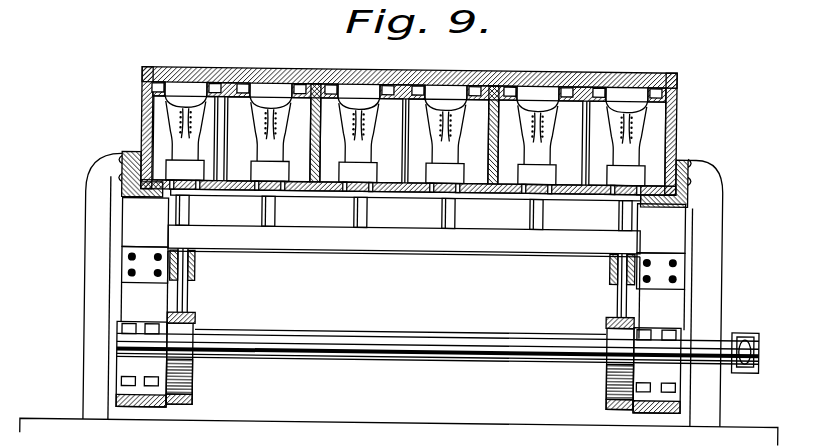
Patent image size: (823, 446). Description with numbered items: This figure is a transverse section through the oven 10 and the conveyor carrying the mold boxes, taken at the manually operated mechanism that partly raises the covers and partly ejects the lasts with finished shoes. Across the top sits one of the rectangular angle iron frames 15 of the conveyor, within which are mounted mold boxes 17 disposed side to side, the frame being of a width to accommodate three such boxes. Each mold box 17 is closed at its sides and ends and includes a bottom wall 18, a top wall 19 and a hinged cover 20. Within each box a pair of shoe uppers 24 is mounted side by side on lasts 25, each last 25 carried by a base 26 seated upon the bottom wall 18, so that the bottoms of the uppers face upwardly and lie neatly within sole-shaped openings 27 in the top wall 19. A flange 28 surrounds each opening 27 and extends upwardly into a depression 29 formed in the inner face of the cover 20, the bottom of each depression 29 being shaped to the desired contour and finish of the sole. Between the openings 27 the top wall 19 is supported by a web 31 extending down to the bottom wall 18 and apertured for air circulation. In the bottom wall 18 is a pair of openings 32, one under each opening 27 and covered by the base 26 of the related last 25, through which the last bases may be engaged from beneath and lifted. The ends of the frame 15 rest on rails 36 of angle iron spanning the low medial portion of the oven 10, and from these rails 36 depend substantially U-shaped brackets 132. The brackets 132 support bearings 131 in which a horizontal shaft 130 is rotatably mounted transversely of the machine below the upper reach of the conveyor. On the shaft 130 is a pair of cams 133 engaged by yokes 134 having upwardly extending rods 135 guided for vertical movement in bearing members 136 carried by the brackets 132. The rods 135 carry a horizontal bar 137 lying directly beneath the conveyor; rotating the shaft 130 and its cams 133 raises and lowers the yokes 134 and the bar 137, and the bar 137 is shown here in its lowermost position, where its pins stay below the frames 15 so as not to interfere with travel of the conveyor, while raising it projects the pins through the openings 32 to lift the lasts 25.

The oven 10 is at (392, 430).
The angle iron frame 15 is at (683, 154).
The mold box 17 is at (140, 110).
The bottom wall 18 is at (406, 191).
The top wall 19 is at (398, 83).
The cover 20 is at (230, 74).
The shoe upper 24 is at (167, 130).
The last 25 is at (302, 188).
The base 26 is at (592, 189).
The sole-shaped opening 27 is at (178, 88).
The flange 28 is at (321, 84).
The depression 29 is at (568, 85).
The web 31 is at (368, 169).
The opening 32 is at (196, 185).
The rail 36 is at (121, 189).
The shaft 130 is at (385, 338).
The bearing 131 is at (141, 333).
The bracket 132 is at (132, 233).
The cam 133 is at (194, 375).
The yoke 134 is at (196, 320).
The rod 135 is at (188, 297).
The bearing member 136 is at (196, 264).
The bar 137 is at (386, 247).